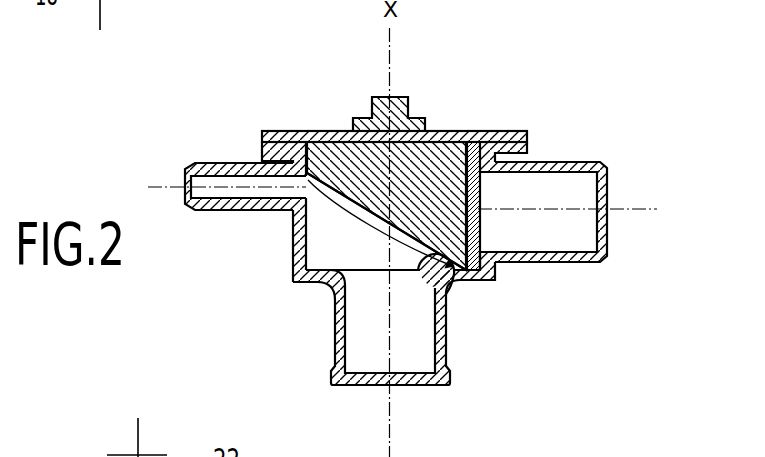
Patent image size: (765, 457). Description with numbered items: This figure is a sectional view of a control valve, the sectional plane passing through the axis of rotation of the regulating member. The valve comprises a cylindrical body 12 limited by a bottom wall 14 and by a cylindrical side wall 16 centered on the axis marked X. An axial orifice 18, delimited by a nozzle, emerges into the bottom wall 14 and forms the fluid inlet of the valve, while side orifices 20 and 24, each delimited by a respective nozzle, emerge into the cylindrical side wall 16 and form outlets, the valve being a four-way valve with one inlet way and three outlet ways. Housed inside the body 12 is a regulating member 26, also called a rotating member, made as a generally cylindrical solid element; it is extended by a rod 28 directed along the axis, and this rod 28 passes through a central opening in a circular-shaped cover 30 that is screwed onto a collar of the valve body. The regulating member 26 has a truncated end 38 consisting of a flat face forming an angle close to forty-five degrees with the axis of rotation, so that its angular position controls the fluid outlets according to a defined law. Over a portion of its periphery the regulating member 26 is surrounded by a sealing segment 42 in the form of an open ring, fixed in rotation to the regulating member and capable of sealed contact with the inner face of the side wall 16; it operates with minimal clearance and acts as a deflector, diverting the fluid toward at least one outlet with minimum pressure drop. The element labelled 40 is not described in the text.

The cylindrical body 12 is at (291, 257).
The bottom wall 14 is at (310, 281).
The cylindrical side wall 16 is at (291, 216).
The axial orifice 18 is at (448, 333).
The side orifice 20 is at (575, 162).
The side orifice 24 is at (215, 163).
The regulating member 26 is at (425, 178).
The rod 28 is at (381, 97).
The cover 30 is at (497, 131).
The truncated end 38 is at (373, 216).
The seat ring 40 is at (444, 294).
The sealing segment 42 is at (482, 224).